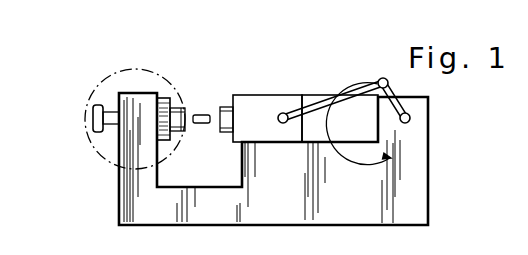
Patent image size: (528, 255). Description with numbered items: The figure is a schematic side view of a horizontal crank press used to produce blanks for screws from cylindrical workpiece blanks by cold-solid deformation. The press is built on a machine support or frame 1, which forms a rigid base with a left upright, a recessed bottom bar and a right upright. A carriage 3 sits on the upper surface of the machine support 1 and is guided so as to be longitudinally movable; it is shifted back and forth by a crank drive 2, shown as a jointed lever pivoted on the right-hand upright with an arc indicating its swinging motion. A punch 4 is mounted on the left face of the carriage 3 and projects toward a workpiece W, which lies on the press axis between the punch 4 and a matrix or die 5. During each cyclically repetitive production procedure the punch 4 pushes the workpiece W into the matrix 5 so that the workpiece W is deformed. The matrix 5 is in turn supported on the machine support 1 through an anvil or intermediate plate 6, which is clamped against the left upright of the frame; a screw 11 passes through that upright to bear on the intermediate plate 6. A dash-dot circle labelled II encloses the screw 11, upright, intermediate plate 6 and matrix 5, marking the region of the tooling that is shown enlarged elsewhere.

The machine support 1 is at (420, 205).
The crank drive 2 is at (360, 88).
The carriage 3 is at (268, 110).
The punch 4 is at (223, 107).
The matrix 5 is at (186, 108).
The intermediate plate 6 is at (166, 102).
The adjusting screw 11 is at (113, 117).
The workpiece W is at (204, 124).
The detail circle II is at (88, 143).